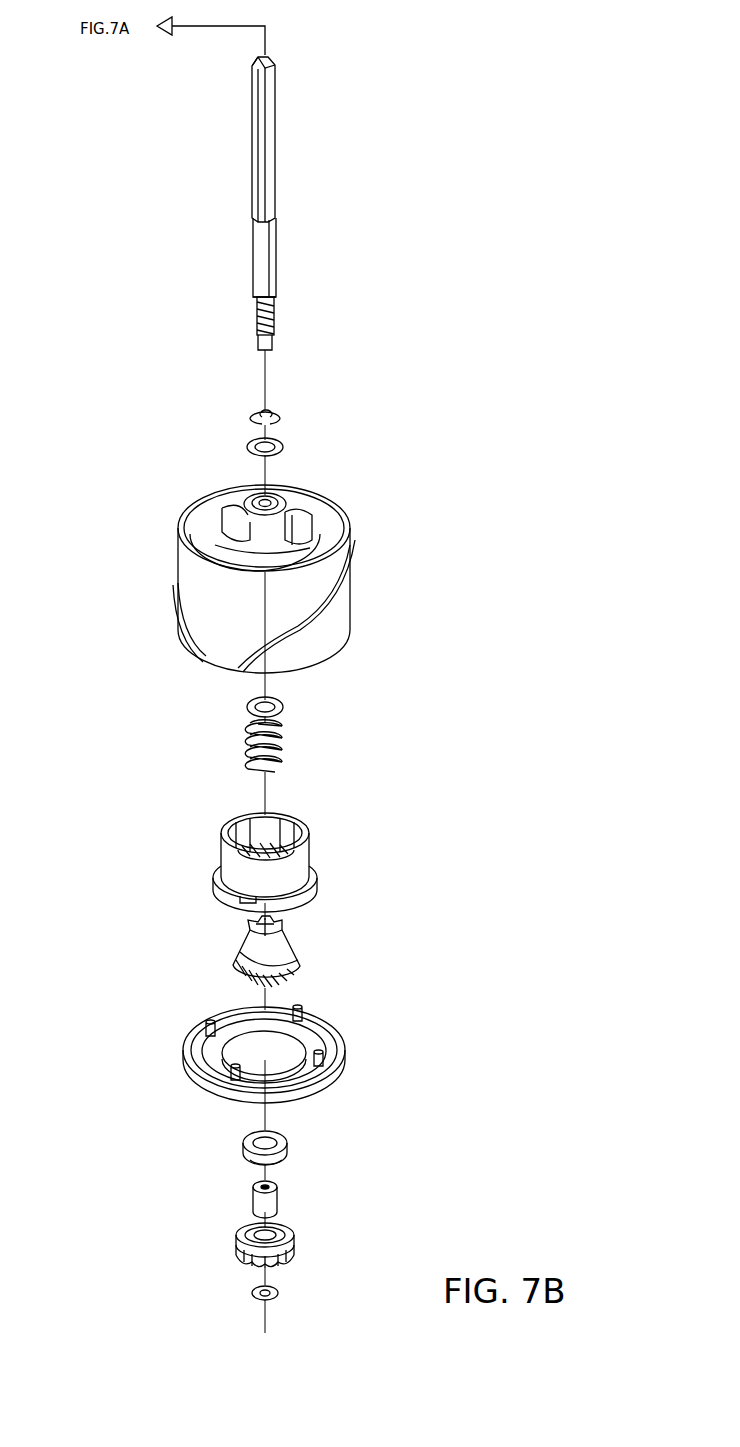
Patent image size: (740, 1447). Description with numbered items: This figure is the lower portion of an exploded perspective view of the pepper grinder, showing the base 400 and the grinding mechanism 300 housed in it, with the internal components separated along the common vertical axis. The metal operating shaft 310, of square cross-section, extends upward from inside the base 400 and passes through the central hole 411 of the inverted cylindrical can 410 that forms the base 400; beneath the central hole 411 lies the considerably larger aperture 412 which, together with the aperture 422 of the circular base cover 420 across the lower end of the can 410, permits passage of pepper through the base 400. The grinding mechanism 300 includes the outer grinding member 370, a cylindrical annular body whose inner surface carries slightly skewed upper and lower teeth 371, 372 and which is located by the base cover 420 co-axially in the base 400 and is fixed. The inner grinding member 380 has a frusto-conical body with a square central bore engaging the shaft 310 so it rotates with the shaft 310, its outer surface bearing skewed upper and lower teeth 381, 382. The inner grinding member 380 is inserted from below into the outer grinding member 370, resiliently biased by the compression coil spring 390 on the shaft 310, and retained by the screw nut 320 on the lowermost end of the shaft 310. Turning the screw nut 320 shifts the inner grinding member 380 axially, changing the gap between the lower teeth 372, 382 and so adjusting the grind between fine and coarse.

The operating shaft 310 is at (272, 178).
The grinding mechanism 300 is at (100, 817).
The base 400 is at (304, 567).
The inverted cylindrical can 410 is at (343, 618).
The central hole 411 is at (284, 500).
The aperture 412 is at (252, 556).
The compression coil spring 390 is at (283, 752).
The outer grinding member 370 is at (329, 846).
The upper teeth 371 is at (286, 826).
The lower teeth 372 is at (252, 845).
The inner grinding member 380 is at (350, 955).
The upper teeth 381 is at (285, 945).
The lower teeth 382 is at (290, 979).
The base cover 420 is at (313, 1054).
The aperture 422 is at (290, 1050).
The screw nut 320 is at (235, 1240).